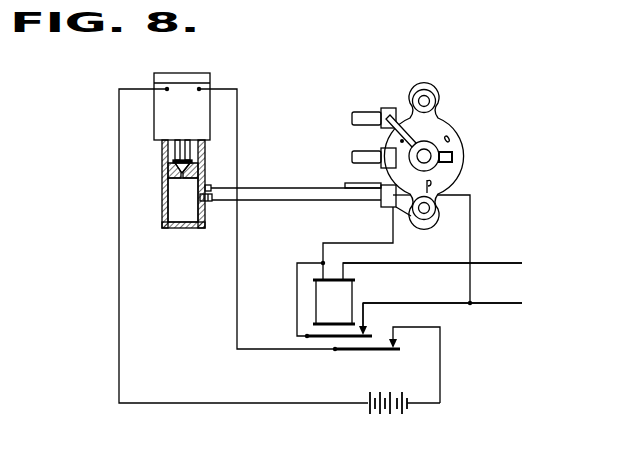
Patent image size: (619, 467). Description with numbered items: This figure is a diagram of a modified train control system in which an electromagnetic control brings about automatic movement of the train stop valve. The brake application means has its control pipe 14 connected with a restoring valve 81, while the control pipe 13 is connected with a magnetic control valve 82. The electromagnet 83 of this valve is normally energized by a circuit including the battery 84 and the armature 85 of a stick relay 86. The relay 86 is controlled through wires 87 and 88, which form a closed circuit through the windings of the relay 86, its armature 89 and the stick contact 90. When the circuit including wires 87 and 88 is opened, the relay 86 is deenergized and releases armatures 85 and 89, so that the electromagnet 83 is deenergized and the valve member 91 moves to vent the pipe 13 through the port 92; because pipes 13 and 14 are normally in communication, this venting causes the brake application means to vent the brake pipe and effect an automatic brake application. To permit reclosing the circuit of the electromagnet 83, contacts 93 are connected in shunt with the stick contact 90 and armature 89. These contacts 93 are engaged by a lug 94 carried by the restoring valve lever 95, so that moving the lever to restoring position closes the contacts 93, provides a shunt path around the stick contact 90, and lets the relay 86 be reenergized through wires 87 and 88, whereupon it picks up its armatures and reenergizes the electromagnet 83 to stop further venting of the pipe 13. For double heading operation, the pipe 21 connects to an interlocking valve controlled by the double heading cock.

The control pipe 13 is at (332, 194).
The control pipe 14 is at (352, 119).
The pipe 21 is at (352, 157).
The restoring valve 81 is at (441, 135).
The magnetic control valve 82 is at (190, 113).
The electromagnet 83 is at (192, 73).
The battery 84 is at (393, 417).
The armature 85 is at (372, 352).
The stick relay 86 is at (345, 289).
The wire 87 is at (446, 265).
The wire 88 is at (456, 303).
The armature 89 is at (327, 336).
The stick contact 90 is at (370, 321).
The valve member 91 is at (173, 160).
The port 92 is at (206, 150).
The contacts 93 is at (430, 188).
The lug 94 is at (452, 156).
The restoring valve lever 95 is at (392, 110).